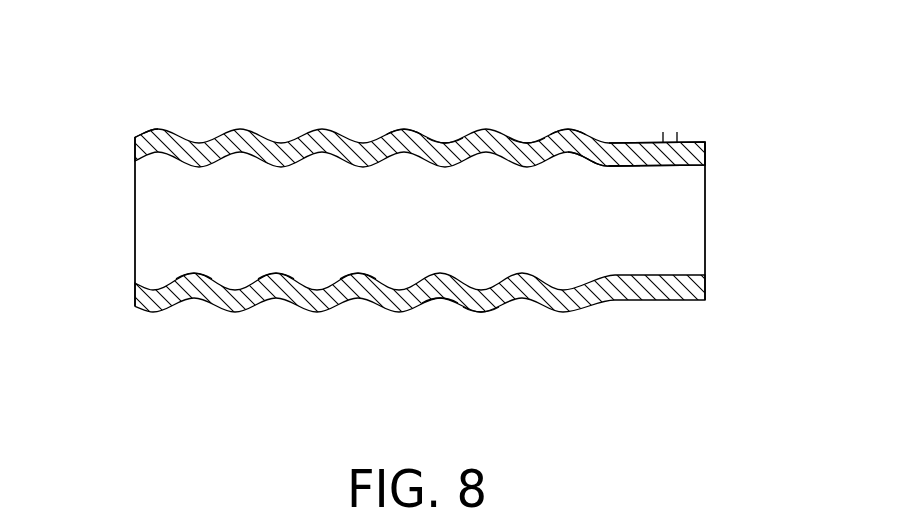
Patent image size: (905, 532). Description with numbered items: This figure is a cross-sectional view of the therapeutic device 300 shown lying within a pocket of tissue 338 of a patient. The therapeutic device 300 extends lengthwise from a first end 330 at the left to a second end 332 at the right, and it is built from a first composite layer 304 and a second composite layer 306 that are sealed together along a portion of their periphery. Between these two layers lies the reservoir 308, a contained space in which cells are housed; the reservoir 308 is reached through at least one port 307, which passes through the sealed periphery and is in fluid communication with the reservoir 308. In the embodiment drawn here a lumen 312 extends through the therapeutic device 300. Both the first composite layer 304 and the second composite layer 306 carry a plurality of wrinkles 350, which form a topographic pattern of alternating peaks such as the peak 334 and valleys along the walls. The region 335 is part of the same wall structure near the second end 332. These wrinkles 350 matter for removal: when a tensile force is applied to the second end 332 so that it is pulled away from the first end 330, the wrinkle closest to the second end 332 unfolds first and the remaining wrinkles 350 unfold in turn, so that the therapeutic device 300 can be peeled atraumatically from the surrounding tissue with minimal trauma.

The therapeutic device 300 is at (212, 128).
The first composite layer 304 is at (400, 129).
The second composite layer 306 is at (441, 162).
The port 307 is at (667, 142).
The reservoir 308 is at (528, 143).
The lumen 312 is at (617, 190).
The first end 330 is at (135, 216).
The second end 332 is at (707, 222).
The peak 334 is at (583, 130).
The distal tip portion 335 is at (699, 160).
The pocket of tissue 338 is at (115, 155).
The wrinkles 350 is at (359, 273).